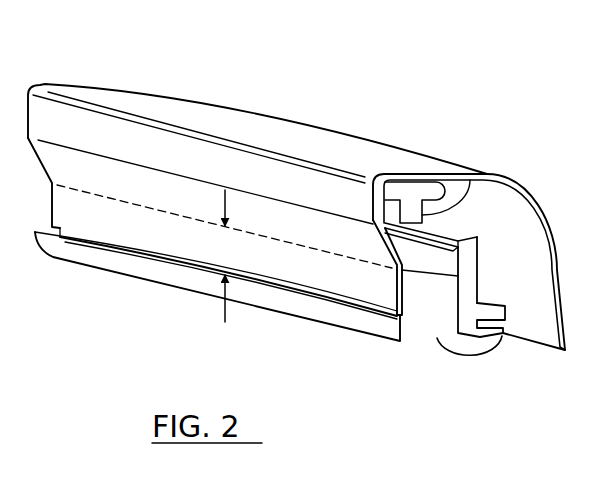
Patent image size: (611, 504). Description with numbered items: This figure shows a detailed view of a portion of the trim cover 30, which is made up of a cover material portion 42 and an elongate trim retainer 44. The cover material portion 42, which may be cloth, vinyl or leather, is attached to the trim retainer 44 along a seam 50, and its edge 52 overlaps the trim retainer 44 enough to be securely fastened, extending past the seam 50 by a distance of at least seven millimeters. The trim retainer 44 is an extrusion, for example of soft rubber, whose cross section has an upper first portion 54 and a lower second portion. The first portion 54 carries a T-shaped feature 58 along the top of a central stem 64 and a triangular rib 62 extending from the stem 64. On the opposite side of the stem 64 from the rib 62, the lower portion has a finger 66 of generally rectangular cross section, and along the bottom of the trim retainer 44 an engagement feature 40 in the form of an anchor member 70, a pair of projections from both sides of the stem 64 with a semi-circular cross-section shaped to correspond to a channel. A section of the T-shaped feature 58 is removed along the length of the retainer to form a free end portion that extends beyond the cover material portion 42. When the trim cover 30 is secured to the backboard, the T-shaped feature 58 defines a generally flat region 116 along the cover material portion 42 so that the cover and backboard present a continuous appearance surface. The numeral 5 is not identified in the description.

The trim cover 30 is at (258, 82).
The flat region 116 is at (278, 127).
The T-shaped feature 58 is at (433, 190).
The upper first portion 54 is at (475, 178).
The cover material portion 42 is at (540, 210).
The trim retainer 44 is at (477, 267).
The central stem 64 is at (475, 281).
The finger 66 is at (505, 321).
The engagement feature 40 is at (488, 347).
The anchor member 70 is at (472, 345).
The end face 5 is at (433, 310).
The rib 62 is at (443, 243).
The seam 50 is at (313, 250).
The edge 52 is at (209, 252).